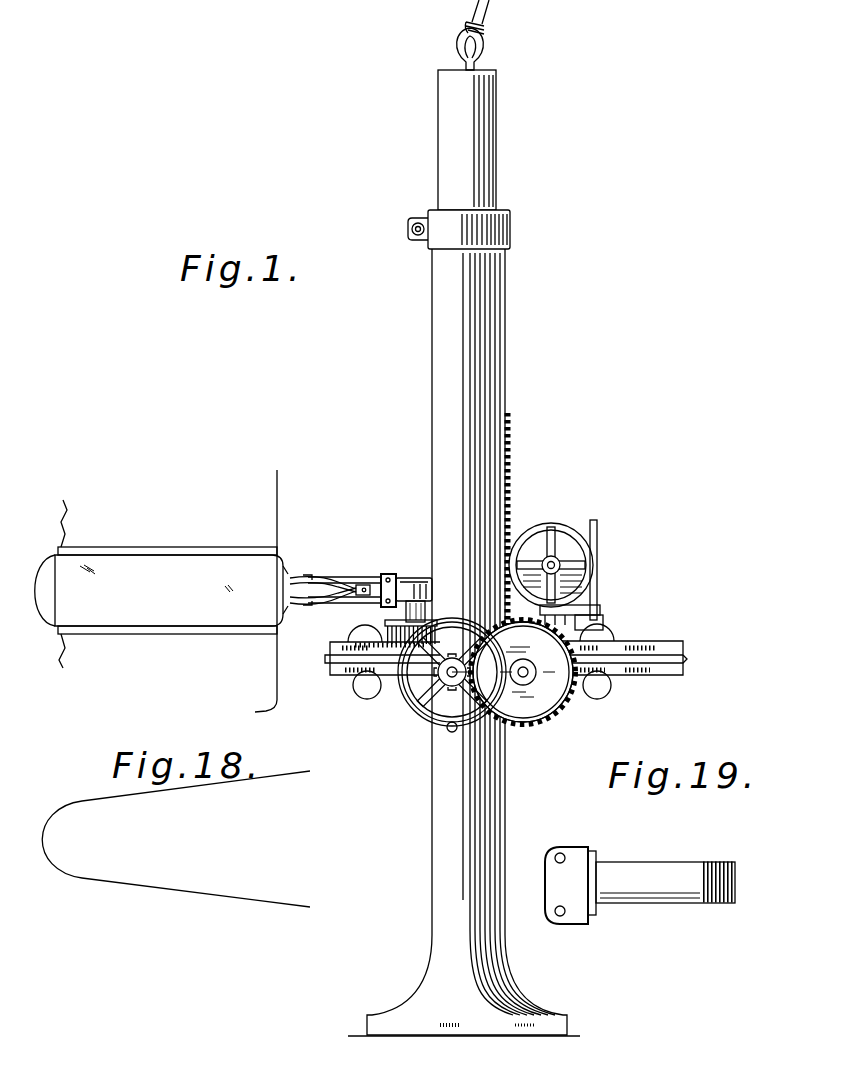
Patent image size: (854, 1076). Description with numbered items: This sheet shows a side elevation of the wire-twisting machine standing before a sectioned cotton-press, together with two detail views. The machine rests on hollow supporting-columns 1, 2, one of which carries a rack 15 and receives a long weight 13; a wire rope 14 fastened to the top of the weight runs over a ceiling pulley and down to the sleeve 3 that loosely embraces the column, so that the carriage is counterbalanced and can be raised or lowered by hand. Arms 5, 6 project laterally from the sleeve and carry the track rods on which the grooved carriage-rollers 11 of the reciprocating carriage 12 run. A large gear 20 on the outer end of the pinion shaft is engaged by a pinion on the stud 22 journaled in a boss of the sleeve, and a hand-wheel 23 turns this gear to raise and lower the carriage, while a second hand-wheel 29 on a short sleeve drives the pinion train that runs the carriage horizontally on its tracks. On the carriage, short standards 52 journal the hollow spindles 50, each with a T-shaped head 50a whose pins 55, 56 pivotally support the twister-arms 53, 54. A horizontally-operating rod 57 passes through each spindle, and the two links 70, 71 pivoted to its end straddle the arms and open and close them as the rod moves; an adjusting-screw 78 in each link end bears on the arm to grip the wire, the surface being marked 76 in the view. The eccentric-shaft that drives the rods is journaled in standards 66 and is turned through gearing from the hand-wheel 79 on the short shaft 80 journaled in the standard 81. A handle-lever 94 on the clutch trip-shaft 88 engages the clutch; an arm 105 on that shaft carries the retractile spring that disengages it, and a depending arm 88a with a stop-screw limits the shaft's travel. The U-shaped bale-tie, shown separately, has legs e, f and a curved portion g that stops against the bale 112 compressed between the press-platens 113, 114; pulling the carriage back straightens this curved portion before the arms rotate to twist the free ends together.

In FIG. 1, the supporting-column 1 is at (464, 642).
In FIG. 1, the supporting-column 2 is at (448, 657).
In FIG. 1, the sleeve 3 is at (452, 672).
In FIG. 1, the arm 5 is at (623, 657).
In FIG. 1, the arm 6 is at (382, 658).
In FIG. 1, the grooved carriage-rollers 11 is at (356, 634).
In FIG. 1, the reciprocating carriage 12 is at (390, 648).
In FIG. 1, the long weight 13 is at (467, 140).
In FIG. 1, the wire rope 14 is at (467, 31).
In FIG. 1, the rack 15 is at (510, 430).
In FIG. 1, the large gear 20 is at (521, 660).
In FIG. 1, the stud 22 is at (470, 672).
In FIG. 1, the hand-wheel 23 is at (445, 726).
In FIG. 1, the hand-wheel 29 is at (567, 712).
In FIG. 1, the hollow spindle 50 is at (388, 590).
In FIG. 19, the hollow spindle 50 is at (665, 882).
In FIG. 19, the T-shaped head 50a is at (570, 885).
In FIG. 1, the short standard 52 is at (411, 599).
In FIG. 1, the twister-arm 53 is at (358, 577).
In FIG. 1, the twister-arm 54 is at (366, 603).
In FIG. 1, the pin 55 is at (390, 578).
In FIG. 1, the pin 56 is at (387, 604).
In FIG. 1, the horizontally-operating rod 57 is at (372, 588).
In FIG. 1, the standard 66 is at (530, 568).
In FIG. 1, the link 70 is at (330, 578).
In FIG. 1, the link 71 is at (330, 600).
In FIG. 1, the jaw lip 76 is at (310, 575).
In FIG. 1, the adjusting-screw 78 is at (308, 606).
In FIG. 1, the hand-wheel 79 is at (537, 528).
In FIG. 1, the short shaft 80 is at (558, 557).
In FIG. 1, the standard 81 is at (552, 565).
In FIG. 1, the shaft 88 is at (590, 615).
In FIG. 1, the arm 88a is at (604, 622).
In FIG. 1, the handle-lever 94 is at (598, 523).
In FIG. 1, the arm 105 is at (600, 600).
In FIG. 1, the bale 112 is at (169, 590).
In FIG. 1, the press-platen 113 is at (183, 542).
In FIG. 1, the press-platen 114 is at (196, 638).
In FIG. 1, the leg of the tie e is at (288, 565).
In FIG. 18, the leg of the tie e is at (250, 779).
In FIG. 1, the leg of the tie f is at (286, 618).
In FIG. 18, the leg of the tie f is at (236, 893).
In FIG. 1, the curved portion g is at (45, 590).
In FIG. 18, the curved portion g is at (43, 836).